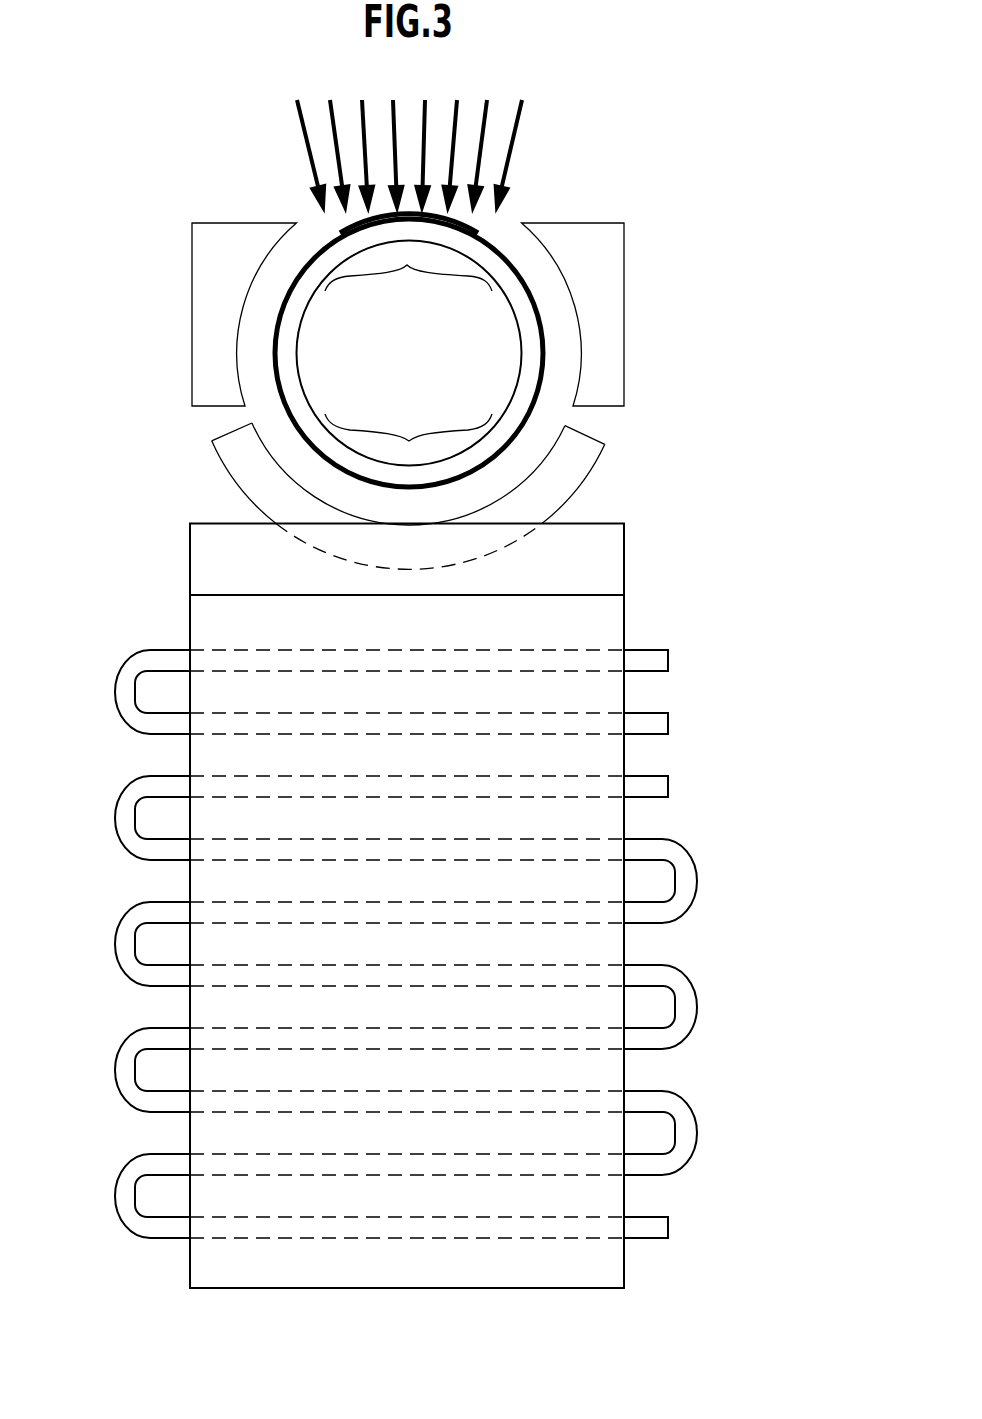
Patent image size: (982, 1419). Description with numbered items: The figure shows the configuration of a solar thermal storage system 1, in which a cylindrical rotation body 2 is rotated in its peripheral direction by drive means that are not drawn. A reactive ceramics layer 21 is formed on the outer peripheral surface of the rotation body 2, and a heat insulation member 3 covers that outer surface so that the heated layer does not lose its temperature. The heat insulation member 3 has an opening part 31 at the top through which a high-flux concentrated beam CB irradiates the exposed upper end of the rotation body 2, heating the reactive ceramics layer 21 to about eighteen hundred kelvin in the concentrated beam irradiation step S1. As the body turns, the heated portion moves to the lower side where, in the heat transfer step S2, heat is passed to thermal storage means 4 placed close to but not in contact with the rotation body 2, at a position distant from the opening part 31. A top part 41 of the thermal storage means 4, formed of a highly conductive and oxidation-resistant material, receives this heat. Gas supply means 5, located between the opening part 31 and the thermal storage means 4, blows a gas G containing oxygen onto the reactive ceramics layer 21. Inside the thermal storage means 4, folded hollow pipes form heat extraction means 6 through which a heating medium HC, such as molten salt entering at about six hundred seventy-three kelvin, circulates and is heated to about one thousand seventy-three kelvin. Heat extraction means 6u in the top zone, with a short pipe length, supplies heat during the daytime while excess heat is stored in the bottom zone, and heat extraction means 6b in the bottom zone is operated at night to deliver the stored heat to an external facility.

The solar thermal storage system 1 is at (607, 170).
The rotation body 2 is at (547, 322).
The reactive ceramics layer 21 is at (547, 353).
The heat insulation member 3 is at (192, 267).
The opening part 31 is at (306, 210).
The thermal storage means 4 is at (632, 625).
The top part 41 is at (224, 470).
The gas supply means 5 is at (634, 417).
The heat extraction means 6 is at (364, 933).
The heat extraction means in the top zone 6u is at (100, 689).
The heat extraction means in the bottom zone 6b is at (100, 939).
The concentrated beam CB is at (409, 137).
The gas containing oxygen G is at (538, 439).
The concentrated beam irradiation step S1 is at (408, 287).
The heat transfer step S2 is at (408, 422).
The heating medium HC is at (677, 661).